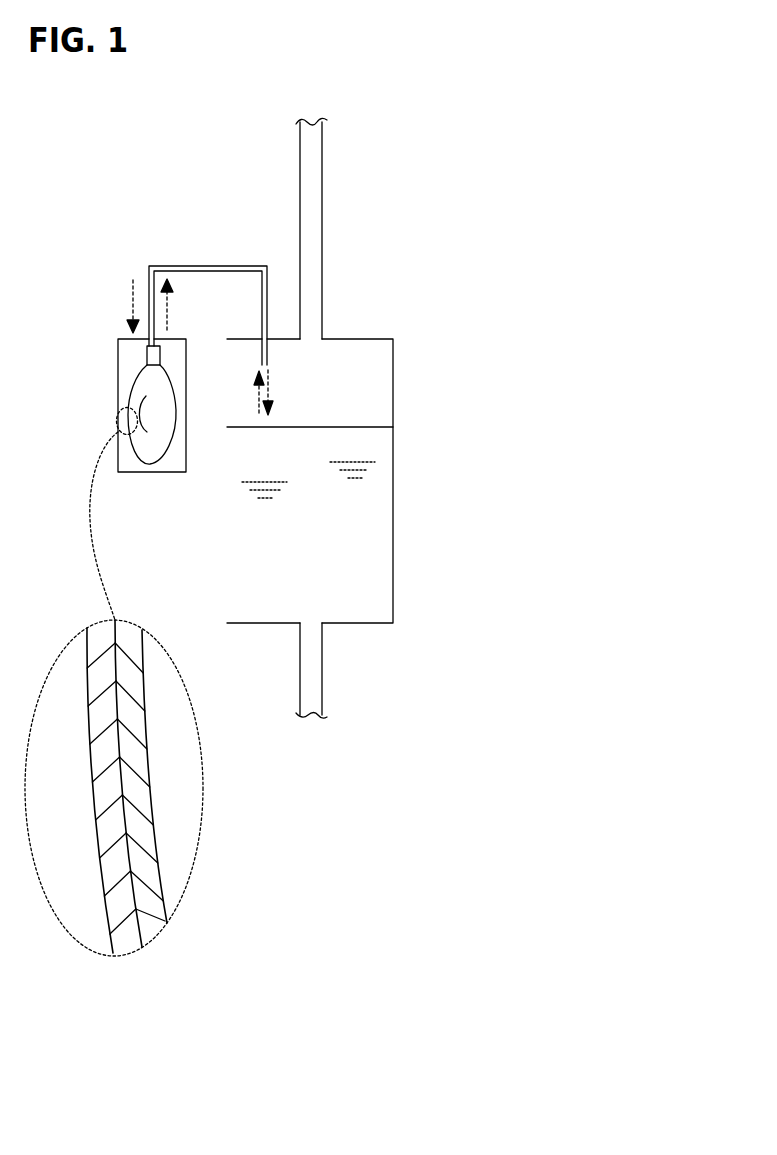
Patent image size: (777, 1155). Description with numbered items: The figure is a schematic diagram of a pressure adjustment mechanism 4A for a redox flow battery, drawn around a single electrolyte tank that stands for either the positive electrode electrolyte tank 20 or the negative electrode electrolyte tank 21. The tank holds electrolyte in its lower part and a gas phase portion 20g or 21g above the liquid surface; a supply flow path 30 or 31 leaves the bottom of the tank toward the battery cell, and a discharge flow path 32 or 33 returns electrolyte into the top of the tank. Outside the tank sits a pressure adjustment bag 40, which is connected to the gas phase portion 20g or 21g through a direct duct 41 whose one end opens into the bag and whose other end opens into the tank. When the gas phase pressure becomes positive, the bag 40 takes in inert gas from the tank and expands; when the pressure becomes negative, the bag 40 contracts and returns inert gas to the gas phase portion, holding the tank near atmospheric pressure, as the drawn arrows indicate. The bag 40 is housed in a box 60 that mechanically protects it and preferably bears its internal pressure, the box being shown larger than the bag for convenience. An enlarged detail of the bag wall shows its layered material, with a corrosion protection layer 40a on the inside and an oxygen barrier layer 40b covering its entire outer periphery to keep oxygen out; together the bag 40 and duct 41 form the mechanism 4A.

The pressure adjustment mechanism 4A is at (321, 559).
The direct duct 41 is at (200, 265).
The box 60 is at (118, 345).
The pressure adjustment bag 40 is at (185, 651).
The corrosion protection layer 40a is at (97, 817).
The oxygen barrier layer 40b is at (110, 868).
The positive electrode electrolyte tank 20 is at (394, 481).
The negative electrode electrolyte tank 21 is at (397, 563).
The gas phase portion 20g is at (397, 399).
The gas phase portion 21g is at (373, 385).
The discharge flow path 32 is at (388, 228).
The discharge flow path 33 is at (322, 177).
The supply flow path 30 is at (383, 670).
The supply flow path 31 is at (322, 667).